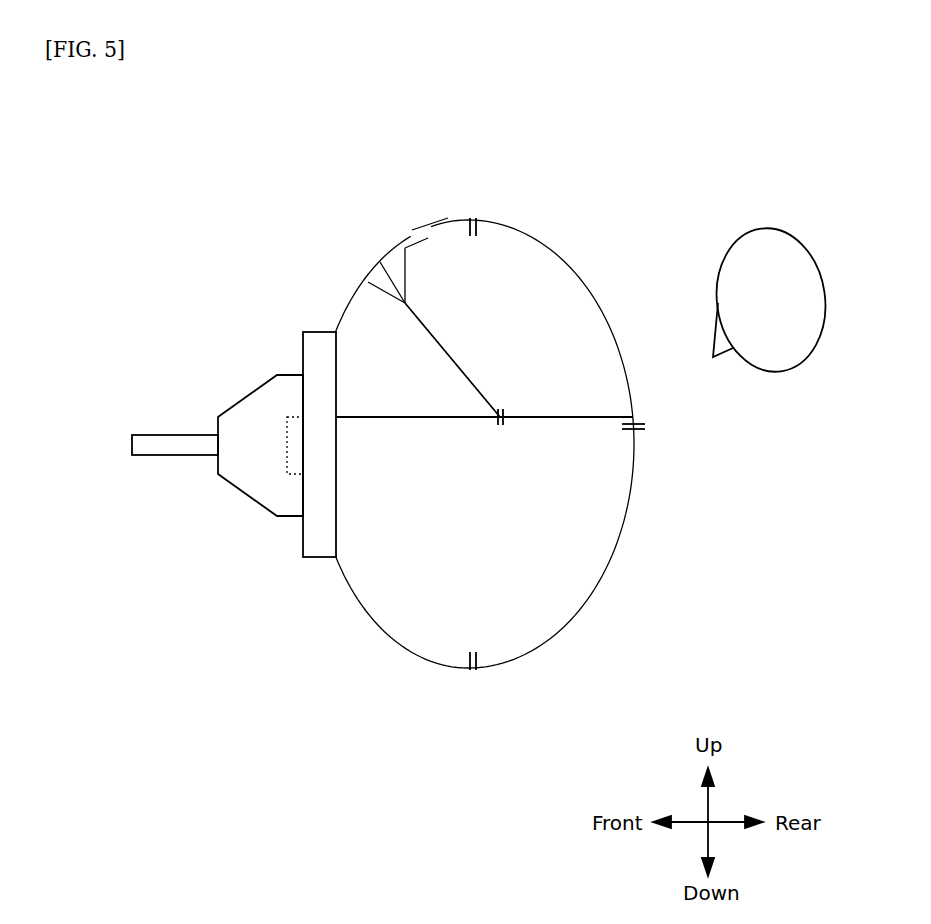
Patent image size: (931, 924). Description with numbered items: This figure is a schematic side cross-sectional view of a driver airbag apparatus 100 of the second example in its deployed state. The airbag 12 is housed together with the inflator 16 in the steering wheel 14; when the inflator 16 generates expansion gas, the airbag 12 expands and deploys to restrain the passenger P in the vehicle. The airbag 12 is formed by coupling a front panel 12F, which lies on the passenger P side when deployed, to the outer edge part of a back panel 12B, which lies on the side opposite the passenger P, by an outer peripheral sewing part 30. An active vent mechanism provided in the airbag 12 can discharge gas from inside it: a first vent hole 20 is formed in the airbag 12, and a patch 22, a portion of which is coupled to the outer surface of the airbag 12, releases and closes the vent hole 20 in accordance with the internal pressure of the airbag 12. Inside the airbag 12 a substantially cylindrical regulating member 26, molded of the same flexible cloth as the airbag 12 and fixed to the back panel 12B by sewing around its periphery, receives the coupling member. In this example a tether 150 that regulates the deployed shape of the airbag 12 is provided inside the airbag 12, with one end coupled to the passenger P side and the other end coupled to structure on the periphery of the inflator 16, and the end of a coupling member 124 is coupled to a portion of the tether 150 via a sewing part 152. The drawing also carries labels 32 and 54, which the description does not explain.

The driver airbag apparatus 100 is at (601, 163).
The airbag 12 is at (624, 602).
The front panel 12F is at (565, 260).
The back panel 12B is at (400, 638).
The steering wheel 14 is at (312, 558).
The inflator 16 is at (287, 432).
The first vent hole 20 is at (428, 240).
The patch 22 is at (428, 226).
The regulating member 26 is at (372, 302).
The outer peripheral sewing part 30 is at (476, 222).
The outline end portion 32 is at (410, 232).
The rear fastener 54 is at (640, 432).
The coupling member 124 is at (457, 366).
The tether 150 is at (553, 415).
The sewing part 152 is at (498, 420).
The passenger P is at (749, 235).